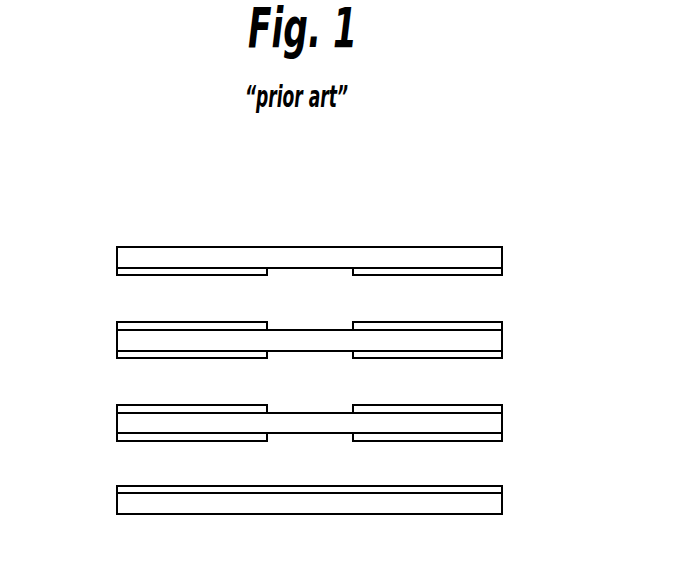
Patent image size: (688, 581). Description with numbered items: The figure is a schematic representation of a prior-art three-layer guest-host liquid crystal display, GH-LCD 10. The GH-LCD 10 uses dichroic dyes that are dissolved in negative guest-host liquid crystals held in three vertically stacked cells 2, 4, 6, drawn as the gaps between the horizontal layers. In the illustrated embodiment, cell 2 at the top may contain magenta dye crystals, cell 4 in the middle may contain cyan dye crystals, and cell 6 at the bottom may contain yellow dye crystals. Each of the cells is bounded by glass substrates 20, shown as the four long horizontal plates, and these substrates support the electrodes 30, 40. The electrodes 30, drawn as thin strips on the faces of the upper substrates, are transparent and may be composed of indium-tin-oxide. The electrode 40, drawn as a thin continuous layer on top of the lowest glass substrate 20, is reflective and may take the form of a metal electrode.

The cell 2 is at (204, 309).
The cell 4 is at (204, 391).
The cell 6 is at (204, 474).
The three-layer GH-LCD 10 is at (551, 205).
The glass substrate 20 is at (117, 255).
The transparent electrode 30 is at (492, 277).
The reflective electrode 40 is at (117, 487).